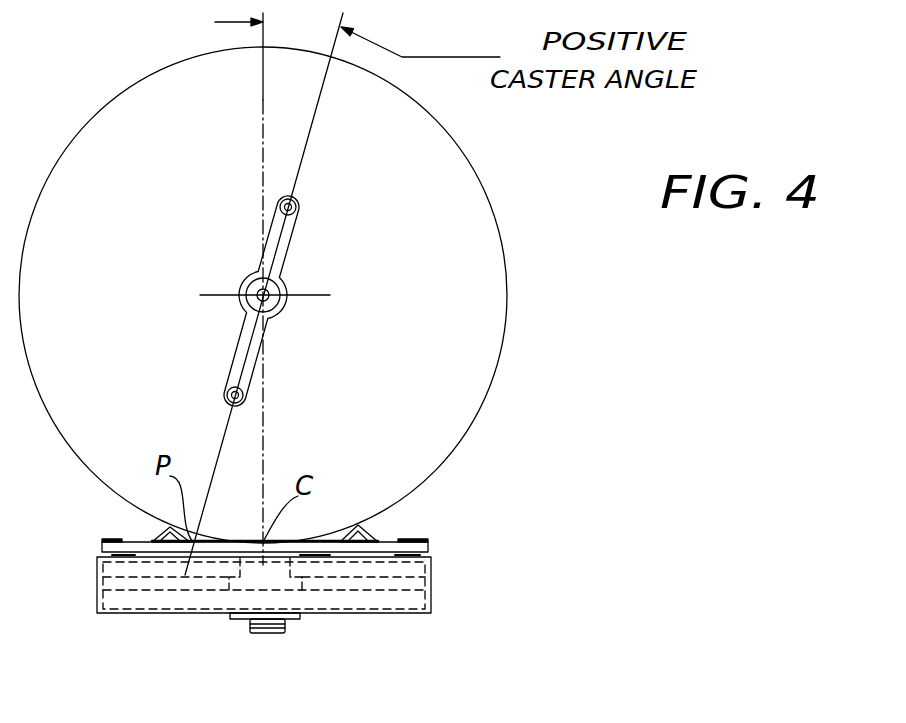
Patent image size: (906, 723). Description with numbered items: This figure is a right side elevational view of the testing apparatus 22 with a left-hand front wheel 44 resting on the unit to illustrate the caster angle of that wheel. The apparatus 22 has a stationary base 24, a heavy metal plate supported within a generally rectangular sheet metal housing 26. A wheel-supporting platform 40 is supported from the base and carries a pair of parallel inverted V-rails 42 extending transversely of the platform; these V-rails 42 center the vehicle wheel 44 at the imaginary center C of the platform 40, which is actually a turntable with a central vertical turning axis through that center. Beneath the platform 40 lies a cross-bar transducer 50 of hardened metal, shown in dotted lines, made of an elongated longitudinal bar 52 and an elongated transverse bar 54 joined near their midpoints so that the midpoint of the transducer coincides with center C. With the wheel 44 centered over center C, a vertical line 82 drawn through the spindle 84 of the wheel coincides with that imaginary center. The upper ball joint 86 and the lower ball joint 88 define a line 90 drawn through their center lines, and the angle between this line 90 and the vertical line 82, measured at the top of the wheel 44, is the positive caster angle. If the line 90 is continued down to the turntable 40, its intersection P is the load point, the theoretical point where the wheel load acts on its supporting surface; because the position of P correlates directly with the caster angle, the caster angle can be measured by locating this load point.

The testing apparatus 22 is at (516, 536).
The stationary base 24 is at (188, 603).
The sheet metal housing 26 is at (440, 584).
The wheel-supporting platform 40 is at (424, 542).
The inverted V-rails 42 is at (162, 537).
The vehicle wheel 44 is at (503, 354).
The cross-bar transducer 50 is at (112, 571).
The longitudinal bar 52 is at (363, 566).
The transverse bar 54 is at (243, 566).
The vertical line 82 is at (263, 163).
The spindle 84 is at (257, 303).
The upper ball joint 86 is at (297, 209).
The lower ball joint 88 is at (227, 397).
The line through ball joints 90 is at (310, 144).